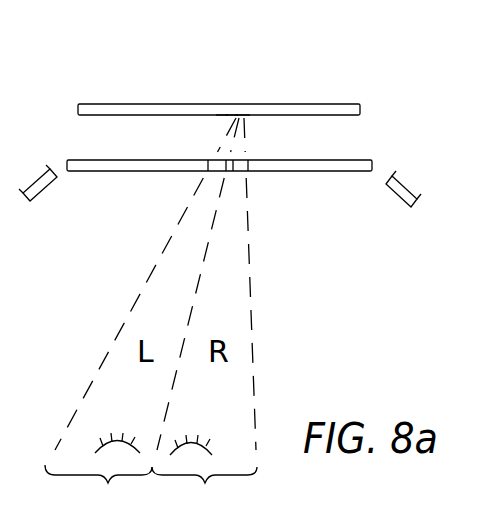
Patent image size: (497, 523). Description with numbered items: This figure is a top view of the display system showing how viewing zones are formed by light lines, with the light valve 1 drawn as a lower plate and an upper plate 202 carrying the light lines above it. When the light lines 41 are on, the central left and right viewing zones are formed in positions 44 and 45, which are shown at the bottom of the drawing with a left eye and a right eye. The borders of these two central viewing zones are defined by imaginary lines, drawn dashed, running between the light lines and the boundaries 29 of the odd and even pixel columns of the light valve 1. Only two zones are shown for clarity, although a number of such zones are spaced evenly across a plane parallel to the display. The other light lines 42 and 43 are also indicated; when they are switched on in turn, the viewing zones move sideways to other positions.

The upper plate (second lens/parallax barrier plate) 202 is at (360, 110).
The display panel / first plate 1 is at (372, 166).
The light lines 41 is at (240, 108).
The light lines 42 is at (231, 113).
The light lines 43 is at (222, 113).
The boundaries of the odd and even pixel columns 29 is at (209, 161).
The position of central left viewing zone 44 is at (98, 478).
The position of central right viewing zone 45 is at (204, 479).